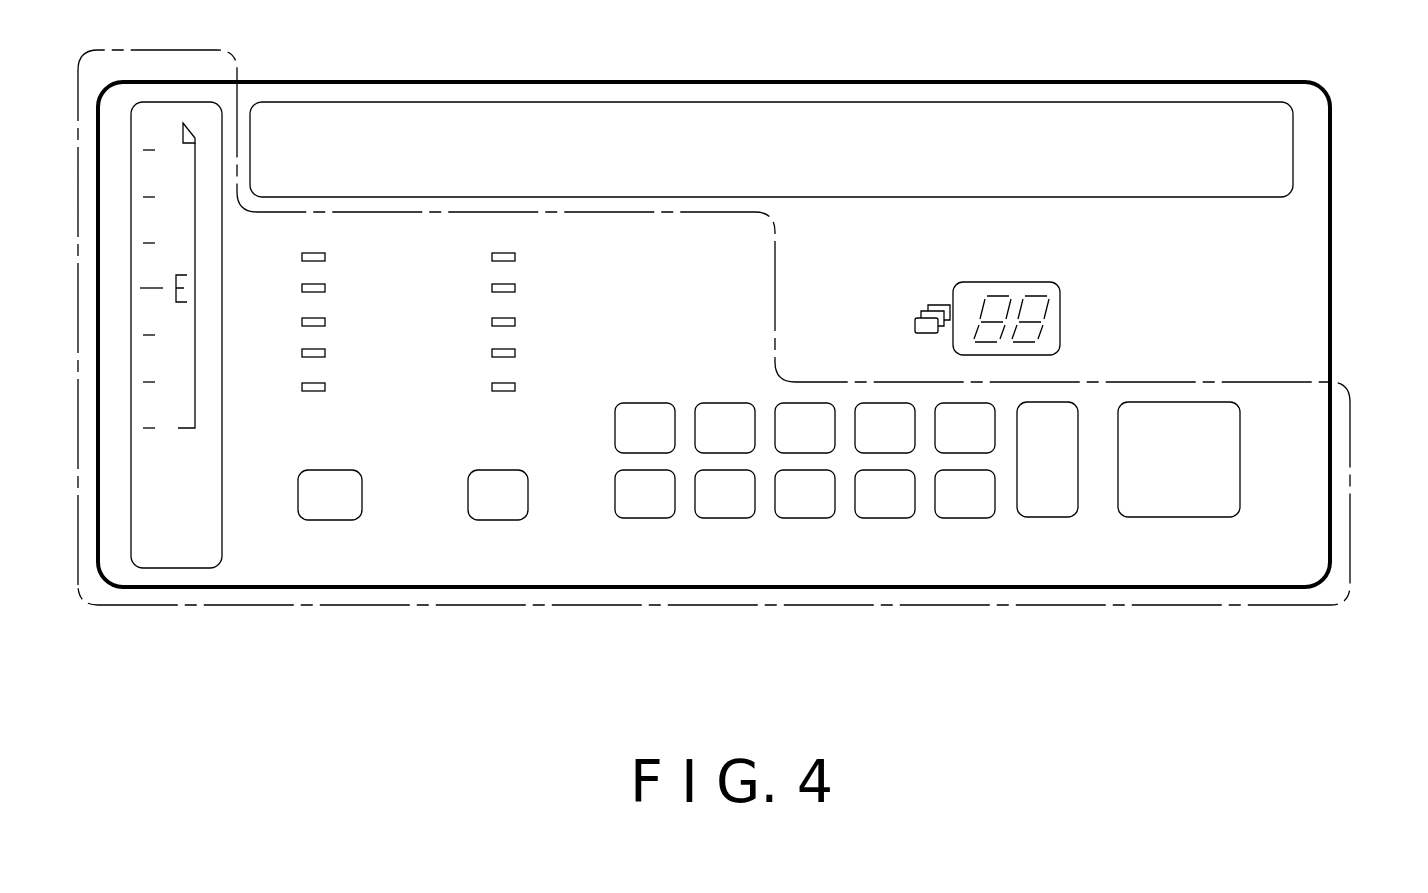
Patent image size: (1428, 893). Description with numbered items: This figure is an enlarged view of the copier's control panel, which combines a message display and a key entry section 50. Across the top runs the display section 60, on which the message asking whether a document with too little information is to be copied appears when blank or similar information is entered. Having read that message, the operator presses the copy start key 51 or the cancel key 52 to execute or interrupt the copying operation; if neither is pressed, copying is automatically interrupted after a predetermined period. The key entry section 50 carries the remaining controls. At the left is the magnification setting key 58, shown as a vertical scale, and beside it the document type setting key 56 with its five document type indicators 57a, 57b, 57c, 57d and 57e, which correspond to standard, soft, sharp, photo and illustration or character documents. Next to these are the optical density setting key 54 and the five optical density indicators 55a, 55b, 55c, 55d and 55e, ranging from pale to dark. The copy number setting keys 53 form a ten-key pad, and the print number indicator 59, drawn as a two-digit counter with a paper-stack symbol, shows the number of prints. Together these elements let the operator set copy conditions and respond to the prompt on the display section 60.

The key entry section 50 is at (1352, 428).
The copy start key 51 is at (1178, 517).
The cancel key 52 is at (1035, 517).
The copy number setting keys 53 is at (998, 530).
The optical density setting key 54 is at (497, 520).
The optical density indicator 55a is at (503, 252).
The optical density indicator 55b is at (515, 288).
The optical density indicator 55c is at (515, 322).
The optical density indicator 55d is at (515, 353).
The optical density indicator 55e is at (500, 391).
The document type setting key 56 is at (330, 520).
The document type indicator 57a is at (302, 257).
The document type indicator 57b is at (302, 288).
The document type indicator 57c is at (302, 322).
The document type indicator 57d is at (302, 353).
The document type indicator 57e is at (302, 387).
The magnification setting key 58 is at (213, 512).
The print number indicator 59 is at (1062, 312).
The display section 60 is at (967, 102).